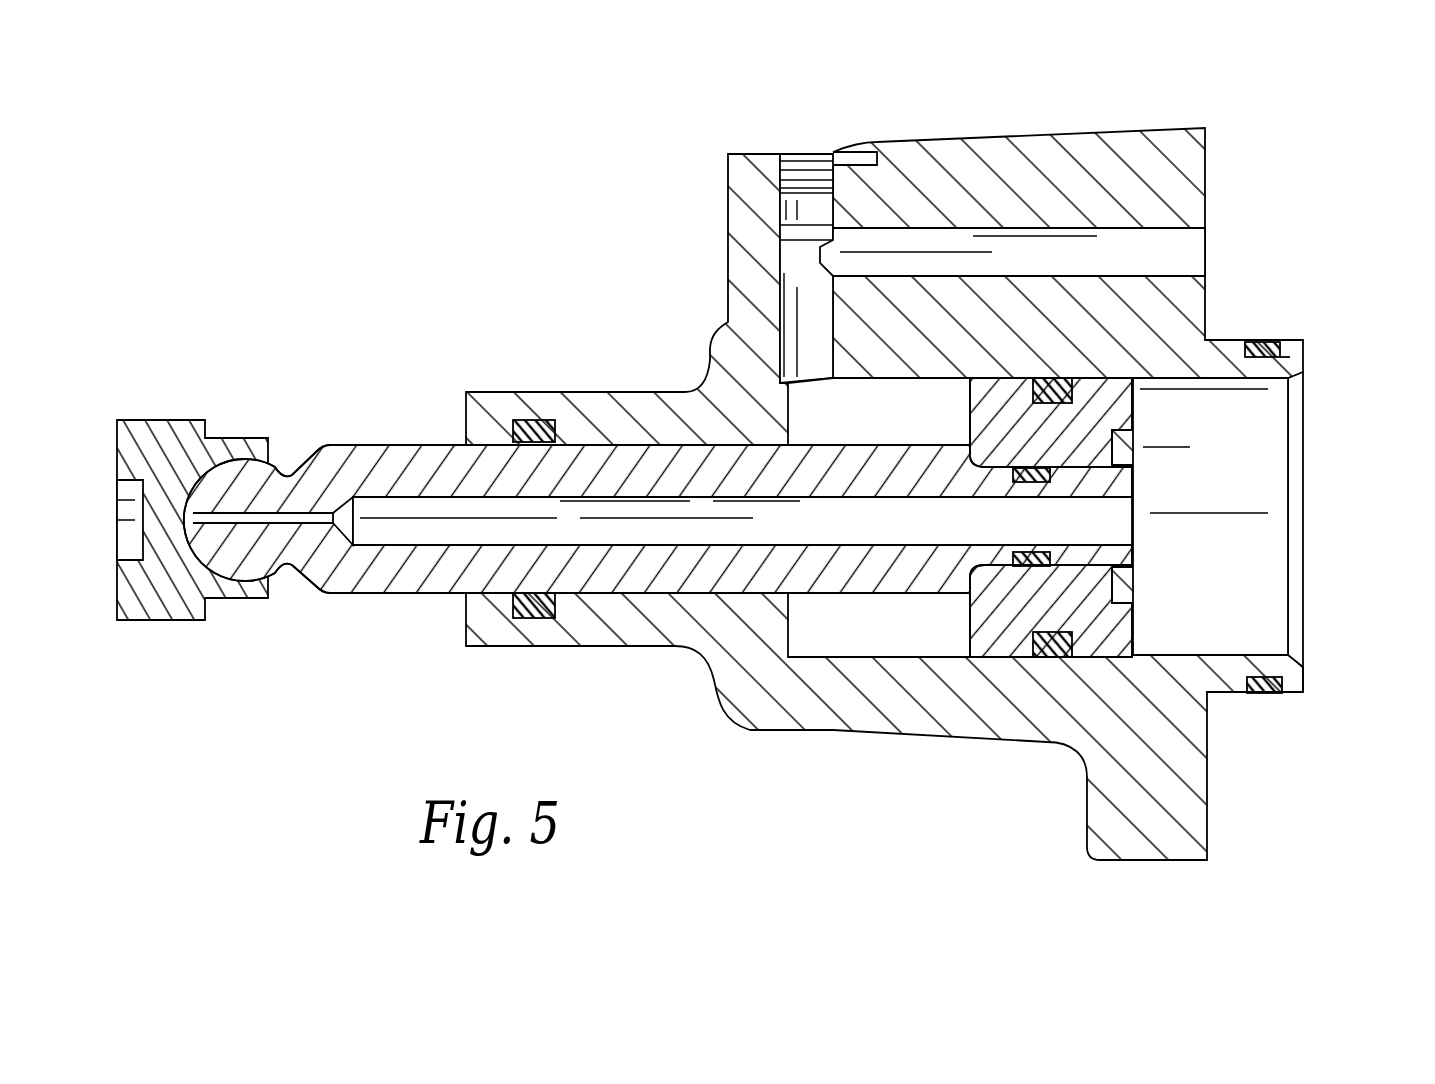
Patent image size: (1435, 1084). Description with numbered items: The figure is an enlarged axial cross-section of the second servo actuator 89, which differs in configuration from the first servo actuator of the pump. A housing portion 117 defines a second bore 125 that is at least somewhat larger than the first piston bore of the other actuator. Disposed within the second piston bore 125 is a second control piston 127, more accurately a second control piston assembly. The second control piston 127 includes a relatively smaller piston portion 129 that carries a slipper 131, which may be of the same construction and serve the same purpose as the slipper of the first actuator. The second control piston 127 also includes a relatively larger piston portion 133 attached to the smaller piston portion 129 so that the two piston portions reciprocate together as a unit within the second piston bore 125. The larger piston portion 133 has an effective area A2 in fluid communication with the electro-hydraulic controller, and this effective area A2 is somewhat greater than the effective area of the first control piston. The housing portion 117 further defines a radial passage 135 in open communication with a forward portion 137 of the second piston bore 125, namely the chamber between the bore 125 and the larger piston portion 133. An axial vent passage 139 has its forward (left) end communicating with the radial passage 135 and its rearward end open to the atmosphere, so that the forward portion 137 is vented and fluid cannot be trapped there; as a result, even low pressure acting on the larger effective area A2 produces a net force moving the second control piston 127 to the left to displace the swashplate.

The servo actuator 89 is at (630, 216).
The housing portion 117 is at (1040, 142).
The second bore 125 is at (1220, 378).
The second control piston 127 is at (942, 613).
The smaller piston portion 129 is at (370, 583).
The slipper 131 is at (173, 422).
The larger piston portion 133 is at (1120, 418).
The radial passage 135 is at (797, 300).
The forward portion 137 is at (821, 648).
The axial vent passage 139 is at (1193, 255).
The effective area A2 is at (1133, 628).